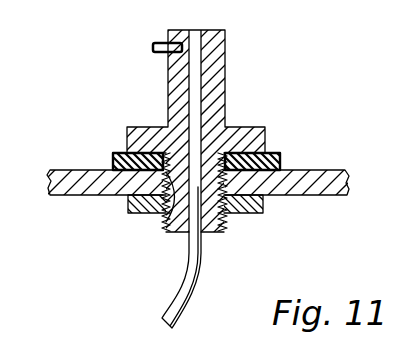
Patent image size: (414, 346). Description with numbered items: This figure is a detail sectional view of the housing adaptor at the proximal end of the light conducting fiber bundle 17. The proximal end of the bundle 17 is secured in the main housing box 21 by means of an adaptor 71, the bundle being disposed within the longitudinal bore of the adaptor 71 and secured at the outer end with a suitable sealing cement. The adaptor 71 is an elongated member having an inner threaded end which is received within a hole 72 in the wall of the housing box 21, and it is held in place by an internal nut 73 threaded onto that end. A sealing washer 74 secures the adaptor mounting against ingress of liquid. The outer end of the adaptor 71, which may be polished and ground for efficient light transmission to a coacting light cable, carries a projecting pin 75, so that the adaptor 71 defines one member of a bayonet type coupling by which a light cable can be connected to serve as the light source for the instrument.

The light conducting fiber bundle 17 is at (200, 257).
The elongated hollow box 21 is at (325, 170).
The adaptor 71 is at (220, 64).
The hole 72 is at (166, 212).
The internal nut 73 is at (260, 213).
The sealing washer 74 is at (115, 153).
The projecting pin 75 is at (155, 43).